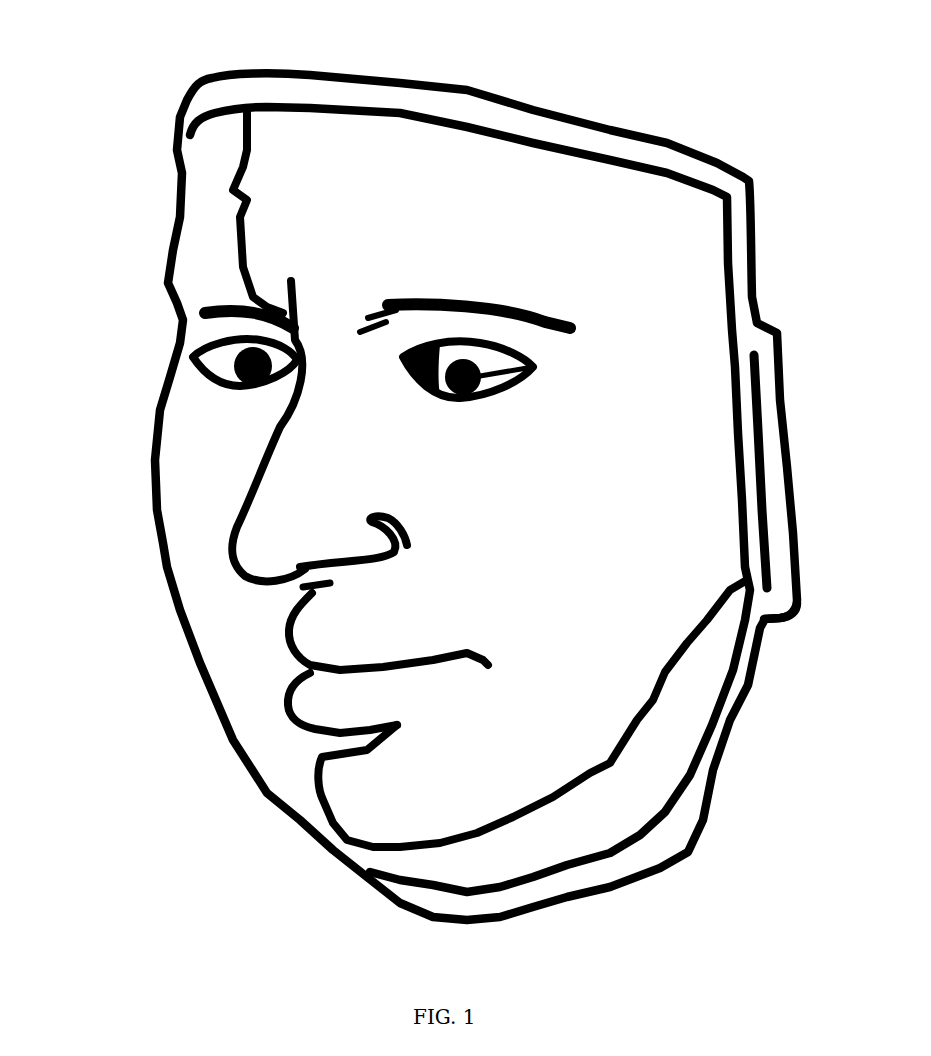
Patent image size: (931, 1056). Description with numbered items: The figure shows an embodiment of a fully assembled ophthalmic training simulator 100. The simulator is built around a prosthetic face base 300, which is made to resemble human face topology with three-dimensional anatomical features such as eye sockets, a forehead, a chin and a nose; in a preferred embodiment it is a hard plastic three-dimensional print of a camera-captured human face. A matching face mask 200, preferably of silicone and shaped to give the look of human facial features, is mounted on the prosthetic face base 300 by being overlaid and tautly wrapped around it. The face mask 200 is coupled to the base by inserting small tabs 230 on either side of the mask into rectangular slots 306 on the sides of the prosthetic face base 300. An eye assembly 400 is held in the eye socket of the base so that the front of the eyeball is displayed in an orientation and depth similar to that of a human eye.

The ophthalmic training simulator 100 is at (458, 467).
The face mask 200 is at (280, 175).
The tabs 230 is at (760, 537).
The prosthetic face base 300 is at (443, 104).
The rectangular slots 306 is at (763, 603).
The eye assembly 400 is at (530, 370).